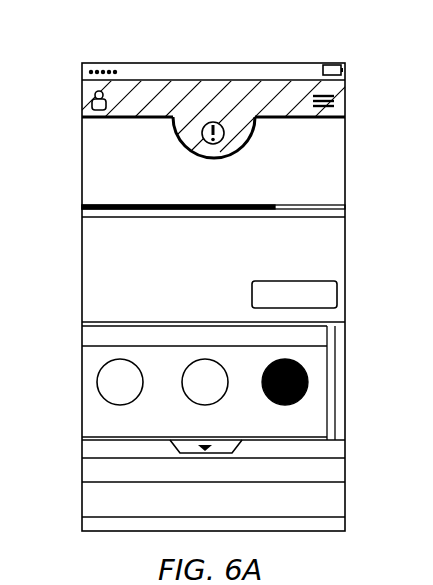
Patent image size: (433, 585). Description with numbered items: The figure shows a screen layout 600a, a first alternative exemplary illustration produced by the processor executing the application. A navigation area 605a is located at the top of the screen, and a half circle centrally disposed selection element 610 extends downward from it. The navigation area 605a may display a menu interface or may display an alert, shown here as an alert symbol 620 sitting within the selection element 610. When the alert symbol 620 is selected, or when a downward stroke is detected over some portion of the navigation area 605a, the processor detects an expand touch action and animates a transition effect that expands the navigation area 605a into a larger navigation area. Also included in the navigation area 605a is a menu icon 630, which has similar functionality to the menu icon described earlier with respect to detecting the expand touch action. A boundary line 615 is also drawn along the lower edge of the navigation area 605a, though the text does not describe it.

The screen layout 600a is at (152, 54).
The navigation area 605a is at (80, 99).
The selection element 610 is at (251, 136).
The header boundary 615 is at (190, 132).
The alert symbol 620 is at (232, 151).
The menu icon 630 is at (323, 96).